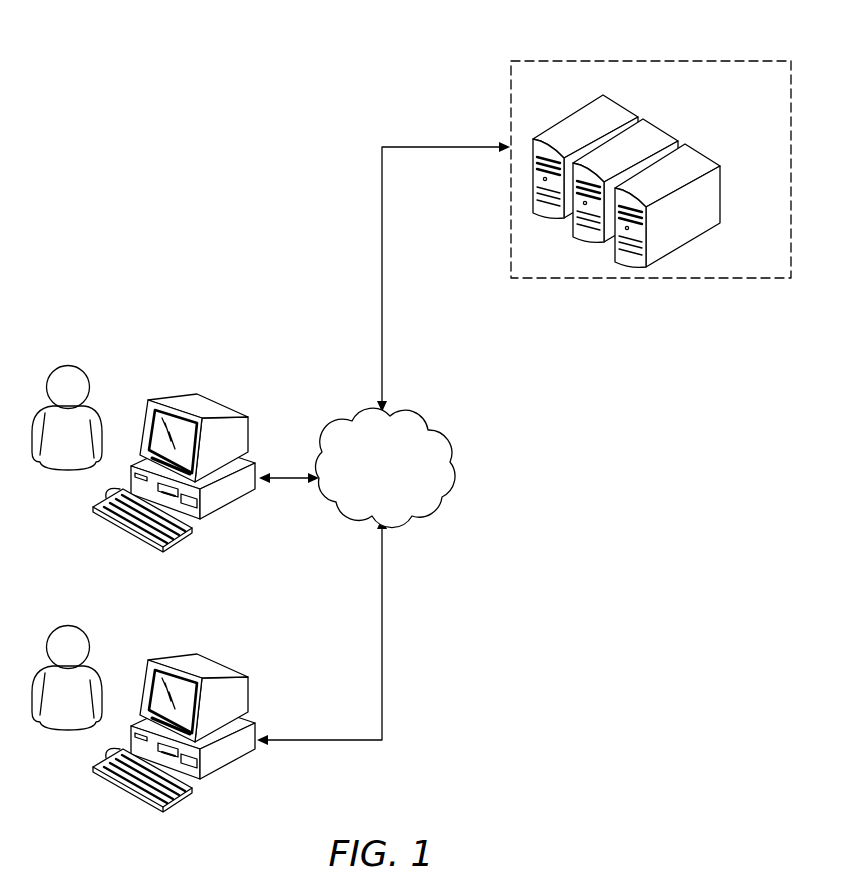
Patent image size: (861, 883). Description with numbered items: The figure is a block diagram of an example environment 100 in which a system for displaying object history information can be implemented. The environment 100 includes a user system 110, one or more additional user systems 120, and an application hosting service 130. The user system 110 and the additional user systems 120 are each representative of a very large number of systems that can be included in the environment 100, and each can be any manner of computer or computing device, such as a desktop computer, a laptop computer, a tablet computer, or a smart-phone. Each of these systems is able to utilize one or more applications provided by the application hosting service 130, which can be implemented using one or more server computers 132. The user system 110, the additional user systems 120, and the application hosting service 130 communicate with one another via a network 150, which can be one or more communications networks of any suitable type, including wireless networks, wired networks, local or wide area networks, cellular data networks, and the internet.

The environment 100 is at (221, 48).
The user system 110 is at (227, 410).
The additional user system 120 is at (227, 670).
The application hosting service 130 is at (676, 59).
The server computer 132 is at (570, 115).
The network 150 is at (423, 418).